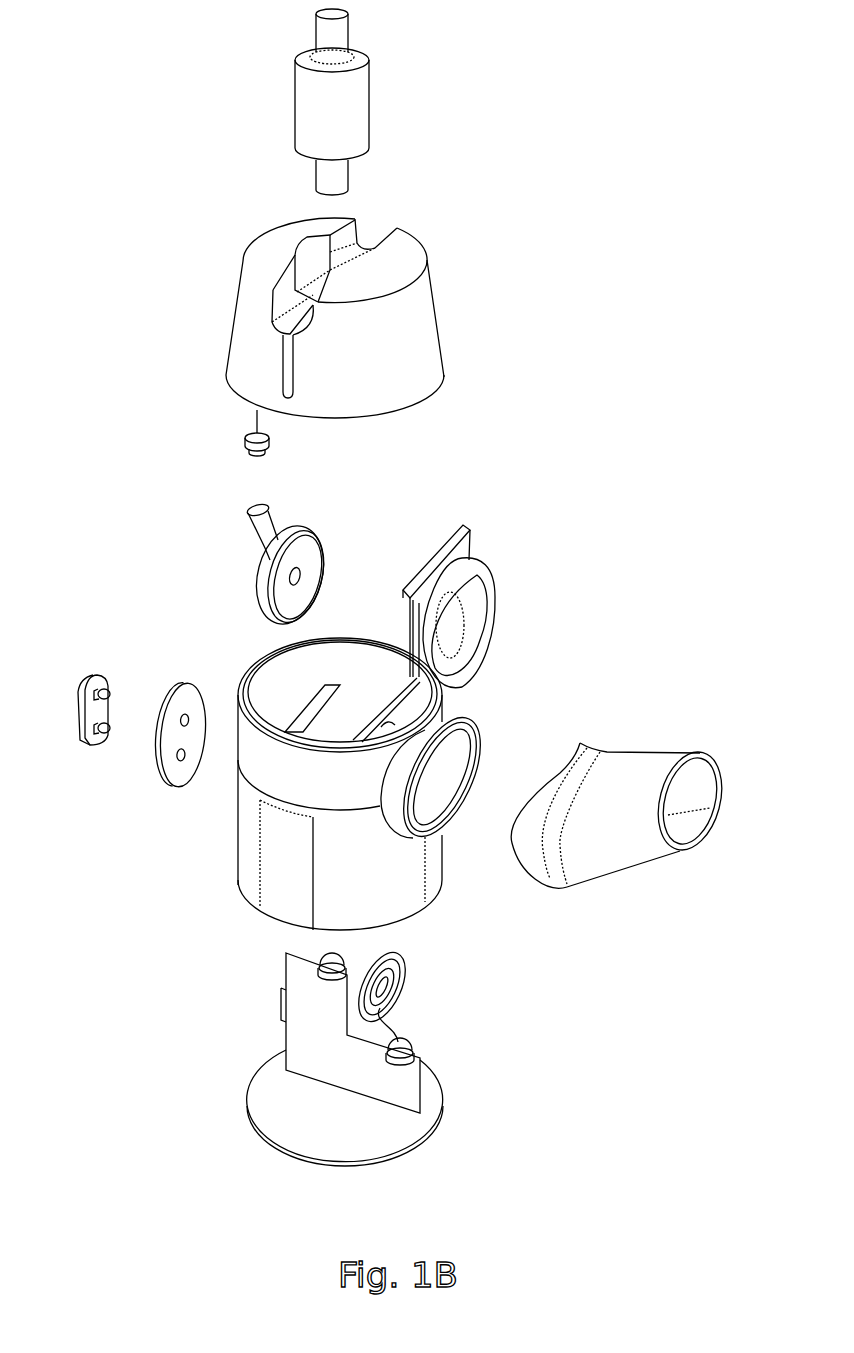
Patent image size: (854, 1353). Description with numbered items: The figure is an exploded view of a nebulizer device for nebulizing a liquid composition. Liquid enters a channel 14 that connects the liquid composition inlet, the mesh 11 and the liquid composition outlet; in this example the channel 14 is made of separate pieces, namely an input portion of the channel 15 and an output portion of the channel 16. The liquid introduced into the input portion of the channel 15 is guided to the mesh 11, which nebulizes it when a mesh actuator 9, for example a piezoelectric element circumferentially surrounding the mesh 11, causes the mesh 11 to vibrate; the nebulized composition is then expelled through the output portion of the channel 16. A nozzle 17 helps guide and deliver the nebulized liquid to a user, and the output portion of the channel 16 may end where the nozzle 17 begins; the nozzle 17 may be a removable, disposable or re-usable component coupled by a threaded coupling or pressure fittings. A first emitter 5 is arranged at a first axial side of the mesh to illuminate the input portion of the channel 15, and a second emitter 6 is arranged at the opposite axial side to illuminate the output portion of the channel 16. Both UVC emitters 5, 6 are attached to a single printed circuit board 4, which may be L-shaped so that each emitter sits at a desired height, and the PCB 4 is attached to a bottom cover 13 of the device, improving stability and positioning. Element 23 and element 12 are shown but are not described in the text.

The cylindrical insert 23 is at (350, 110).
The pin 12 is at (248, 427).
The input portion of the channel 15 is at (345, 549).
The channel 14 is at (272, 520).
The output portion of the channel 16 is at (482, 615).
The first emitter 5 is at (327, 955).
The mesh actuator 9 is at (393, 955).
The nozzle 17 is at (618, 858).
The bottom cover 13 is at (398, 1123).
The printed circuit board 4 is at (302, 1033).
The second emitter 6 is at (407, 1037).
The mesh 11 is at (400, 985).